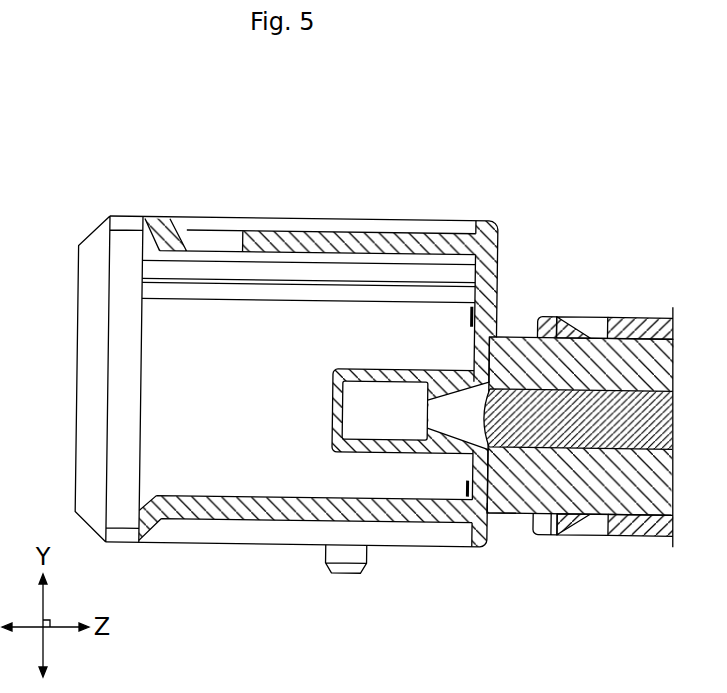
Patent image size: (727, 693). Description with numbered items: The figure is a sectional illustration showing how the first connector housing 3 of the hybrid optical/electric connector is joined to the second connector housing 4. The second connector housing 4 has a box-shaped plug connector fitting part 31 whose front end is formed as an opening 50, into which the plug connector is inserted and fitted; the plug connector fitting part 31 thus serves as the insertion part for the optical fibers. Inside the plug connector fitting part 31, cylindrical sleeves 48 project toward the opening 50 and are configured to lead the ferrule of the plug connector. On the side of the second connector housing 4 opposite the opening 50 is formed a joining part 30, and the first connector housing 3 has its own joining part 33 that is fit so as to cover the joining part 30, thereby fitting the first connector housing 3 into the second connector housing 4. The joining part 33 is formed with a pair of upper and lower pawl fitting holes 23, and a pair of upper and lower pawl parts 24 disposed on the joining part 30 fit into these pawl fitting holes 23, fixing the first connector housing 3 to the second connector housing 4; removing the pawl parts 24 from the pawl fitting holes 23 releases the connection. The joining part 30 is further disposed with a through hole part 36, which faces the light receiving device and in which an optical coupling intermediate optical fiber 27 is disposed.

The first connector housing 3 is at (580, 421).
The second connector housing 4 is at (325, 361).
The pawl fitting holes 23 is at (598, 320).
The pawl parts 24 is at (569, 320).
The optical coupling intermediate optical fiber 27 is at (552, 420).
The joining part 30 is at (520, 350).
The plug connector fitting part 31 is at (350, 236).
The joining part 33 is at (667, 320).
The through hole part 36 is at (513, 513).
The cylindrical sleeves 48 is at (390, 368).
The opening 50 is at (155, 431).